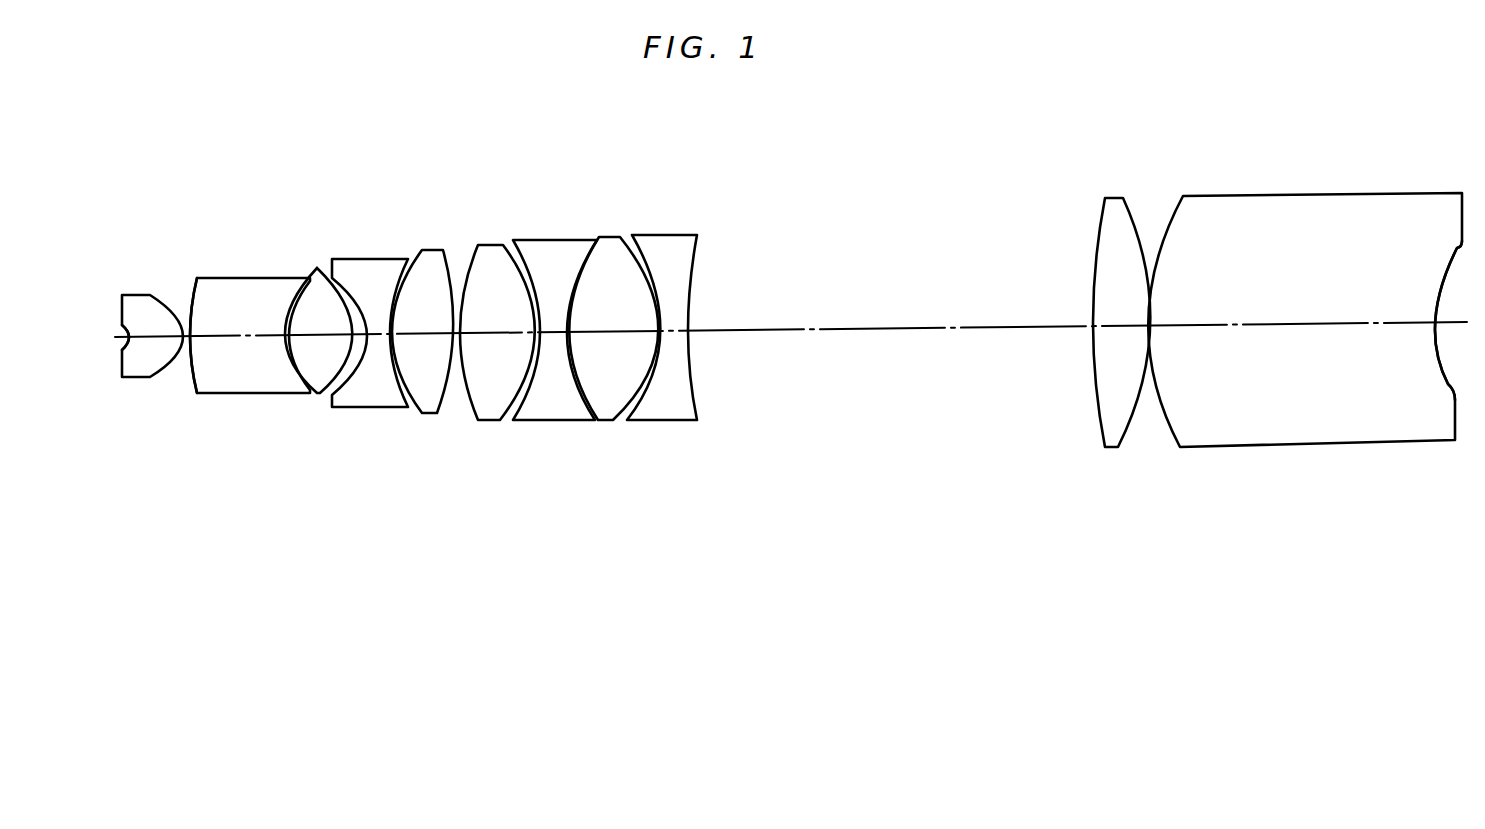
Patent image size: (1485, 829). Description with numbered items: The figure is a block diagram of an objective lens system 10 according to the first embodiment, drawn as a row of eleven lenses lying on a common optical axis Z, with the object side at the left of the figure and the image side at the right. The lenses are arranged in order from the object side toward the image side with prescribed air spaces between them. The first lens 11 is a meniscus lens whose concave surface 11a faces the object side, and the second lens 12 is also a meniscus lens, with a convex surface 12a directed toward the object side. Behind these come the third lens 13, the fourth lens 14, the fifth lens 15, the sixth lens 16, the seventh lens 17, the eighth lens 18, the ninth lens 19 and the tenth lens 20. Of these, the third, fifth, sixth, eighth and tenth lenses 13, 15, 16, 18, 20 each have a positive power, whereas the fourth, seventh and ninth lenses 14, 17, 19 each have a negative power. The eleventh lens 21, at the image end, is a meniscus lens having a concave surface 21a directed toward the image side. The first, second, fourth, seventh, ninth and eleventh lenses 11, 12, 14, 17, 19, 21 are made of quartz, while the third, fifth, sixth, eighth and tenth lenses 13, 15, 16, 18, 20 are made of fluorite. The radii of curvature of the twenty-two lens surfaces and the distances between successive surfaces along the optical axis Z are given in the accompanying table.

The objective lens system 10 is at (1156, 123).
The first lens 11 is at (145, 378).
The concave surface 11a is at (123, 331).
The second lens 12 is at (213, 385).
The convex surface 12a is at (191, 298).
The third lens 13 is at (325, 390).
The fourth lens 14 is at (375, 401).
The fifth lens 15 is at (432, 411).
The sixth lens 16 is at (490, 411).
The seventh lens 17 is at (558, 411).
The eighth lens 18 is at (608, 411).
The ninth lens 19 is at (673, 411).
The tenth lens 20 is at (1110, 437).
The eleventh lens 21 is at (1263, 432).
The concave surface 21a is at (1458, 382).
The optical axis Z is at (828, 325).